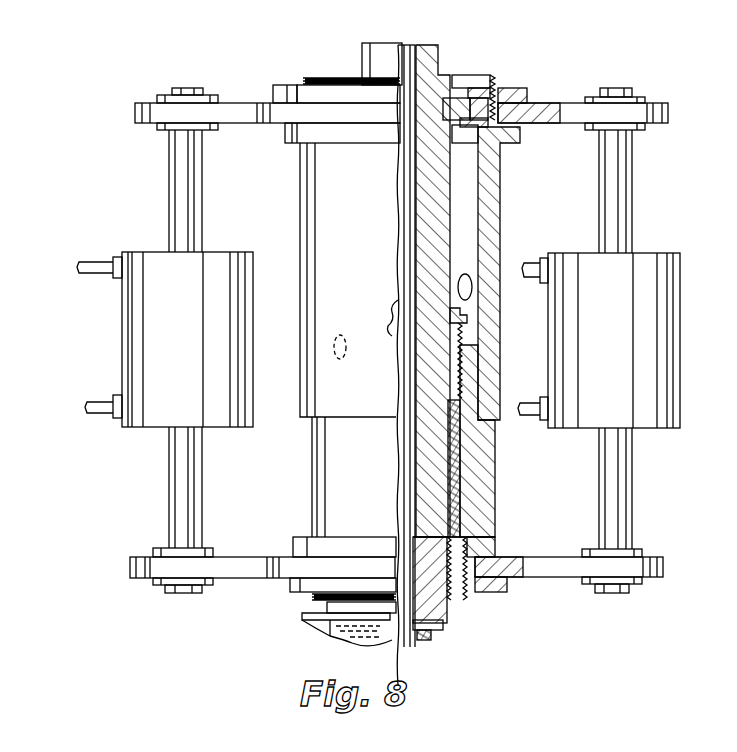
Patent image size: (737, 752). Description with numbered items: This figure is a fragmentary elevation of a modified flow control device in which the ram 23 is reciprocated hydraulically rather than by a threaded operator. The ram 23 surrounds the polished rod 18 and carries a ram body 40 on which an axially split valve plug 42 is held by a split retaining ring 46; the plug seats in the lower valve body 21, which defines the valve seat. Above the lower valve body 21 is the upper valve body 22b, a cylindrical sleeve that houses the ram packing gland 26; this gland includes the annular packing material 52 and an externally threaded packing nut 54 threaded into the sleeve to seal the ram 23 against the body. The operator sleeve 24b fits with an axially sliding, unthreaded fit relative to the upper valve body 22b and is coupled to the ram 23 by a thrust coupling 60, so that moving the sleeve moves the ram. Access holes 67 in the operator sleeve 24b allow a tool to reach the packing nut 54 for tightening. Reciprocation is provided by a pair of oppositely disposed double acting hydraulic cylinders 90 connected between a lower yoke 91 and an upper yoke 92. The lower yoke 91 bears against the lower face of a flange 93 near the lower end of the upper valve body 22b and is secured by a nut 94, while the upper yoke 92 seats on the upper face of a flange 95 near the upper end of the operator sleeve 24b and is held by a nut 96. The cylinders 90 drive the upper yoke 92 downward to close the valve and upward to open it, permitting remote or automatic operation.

The polished rod 18 is at (410, 47).
The lower valve body 21 is at (312, 623).
The upper valve body 22b is at (311, 457).
The ram 23 is at (450, 189).
The operator sleeve 24b is at (300, 182).
The ram packing gland 26 is at (478, 444).
The ram body 40 is at (444, 215).
The valve plug 42 is at (440, 612).
The retaining ring 46 is at (430, 640).
The annular packing material 52 is at (462, 473).
The packing nut 54 is at (462, 340).
The thrust coupling 60 is at (470, 86).
The access holes 67 is at (398, 308).
The hydraulic cylinders 90 is at (130, 306).
The lower yoke 91 is at (228, 572).
The upper yoke 92 is at (228, 103).
The flange 93 is at (308, 537).
The nut 94 is at (505, 592).
The flange 95 is at (513, 130).
The nut 96 is at (296, 92).